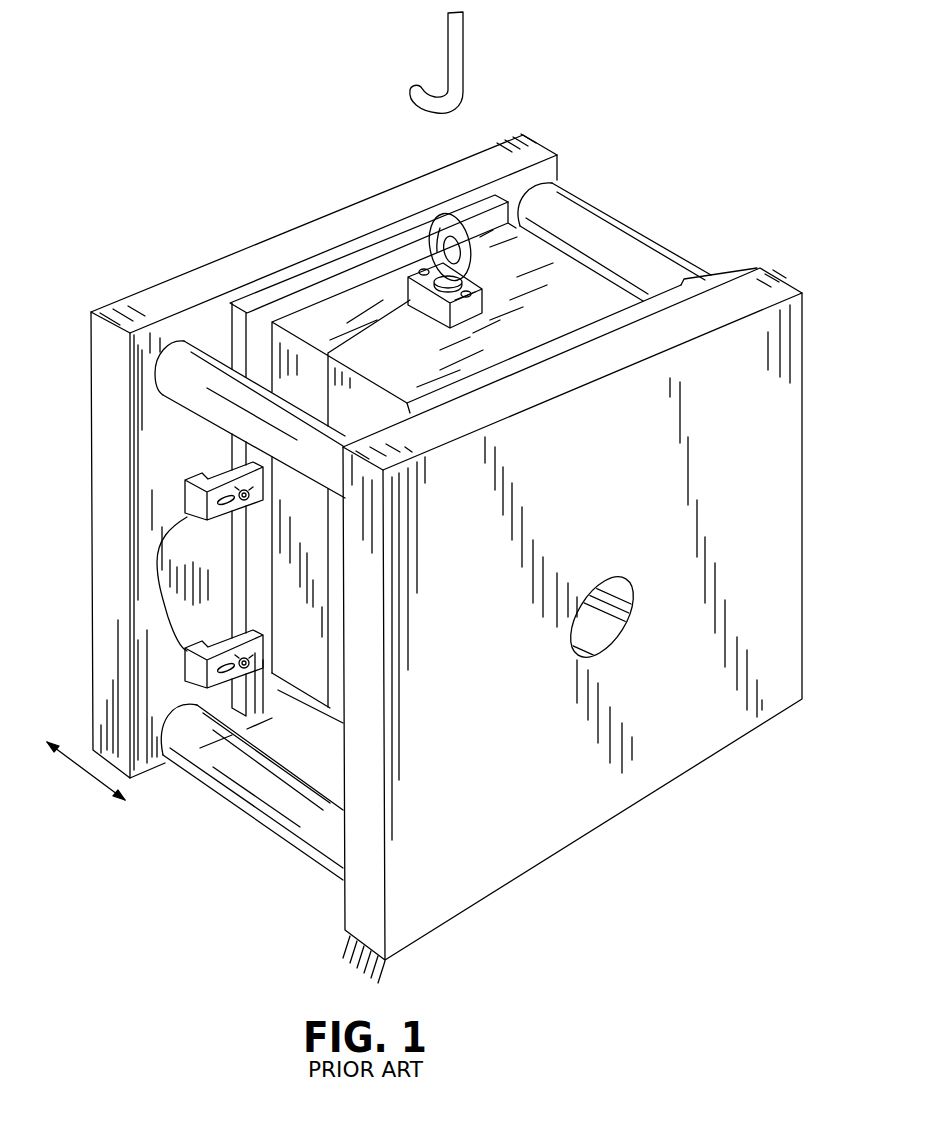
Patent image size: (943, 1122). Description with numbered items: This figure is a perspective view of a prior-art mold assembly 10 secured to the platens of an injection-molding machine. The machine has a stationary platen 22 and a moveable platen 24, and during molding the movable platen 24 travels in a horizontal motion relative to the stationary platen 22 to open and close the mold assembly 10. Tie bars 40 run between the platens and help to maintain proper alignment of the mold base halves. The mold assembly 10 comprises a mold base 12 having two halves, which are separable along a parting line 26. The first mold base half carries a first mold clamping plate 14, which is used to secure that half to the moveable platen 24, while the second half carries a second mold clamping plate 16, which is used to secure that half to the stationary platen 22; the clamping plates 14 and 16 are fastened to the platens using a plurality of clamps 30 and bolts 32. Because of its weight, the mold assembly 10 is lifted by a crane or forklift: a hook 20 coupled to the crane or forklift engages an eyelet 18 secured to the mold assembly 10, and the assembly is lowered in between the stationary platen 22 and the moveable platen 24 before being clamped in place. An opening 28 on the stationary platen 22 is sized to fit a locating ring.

The mold assembly 10 is at (430, 497).
The mold base 12 is at (590, 267).
The first mold clamping plate 14 is at (230, 313).
The second mold clamping plate 16 is at (705, 275).
The eyelet 18 is at (428, 243).
The hook 20 is at (464, 52).
The stationary platen 22 is at (770, 281).
The moveable platen 24 is at (535, 143).
The parting line 26 is at (367, 327).
The opening 28 is at (632, 626).
The clamps 30 is at (171, 624).
The bolts 32 is at (240, 653).
The tie bars 40 is at (575, 200).